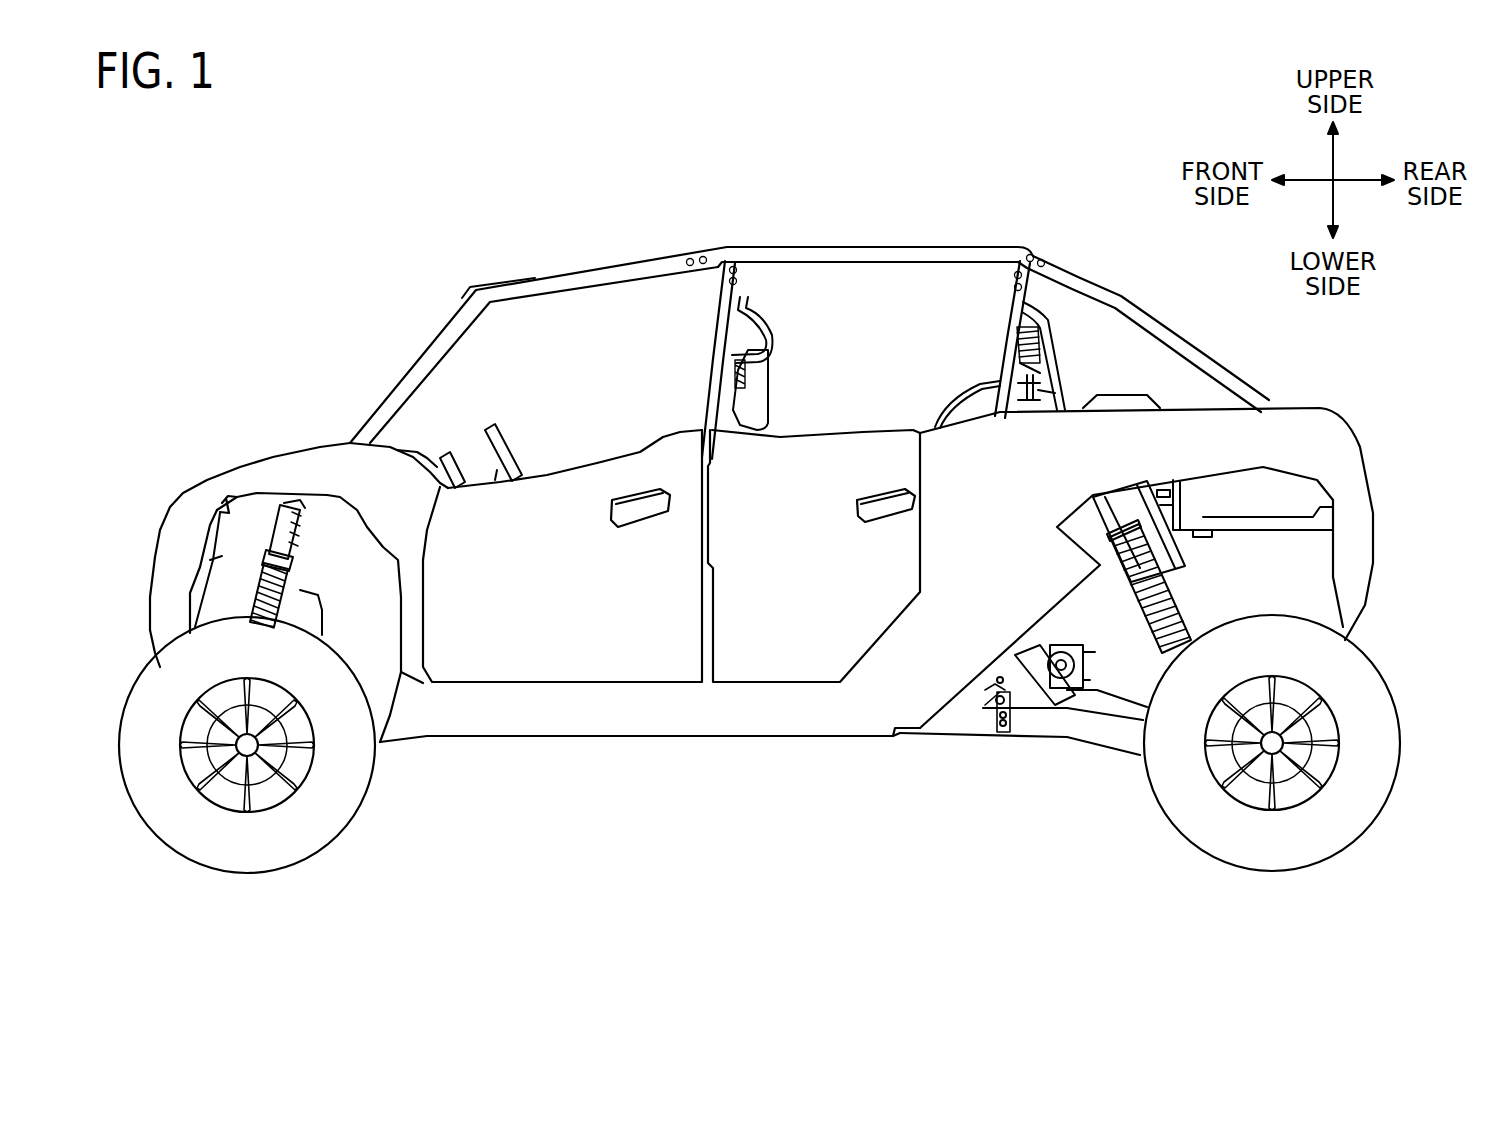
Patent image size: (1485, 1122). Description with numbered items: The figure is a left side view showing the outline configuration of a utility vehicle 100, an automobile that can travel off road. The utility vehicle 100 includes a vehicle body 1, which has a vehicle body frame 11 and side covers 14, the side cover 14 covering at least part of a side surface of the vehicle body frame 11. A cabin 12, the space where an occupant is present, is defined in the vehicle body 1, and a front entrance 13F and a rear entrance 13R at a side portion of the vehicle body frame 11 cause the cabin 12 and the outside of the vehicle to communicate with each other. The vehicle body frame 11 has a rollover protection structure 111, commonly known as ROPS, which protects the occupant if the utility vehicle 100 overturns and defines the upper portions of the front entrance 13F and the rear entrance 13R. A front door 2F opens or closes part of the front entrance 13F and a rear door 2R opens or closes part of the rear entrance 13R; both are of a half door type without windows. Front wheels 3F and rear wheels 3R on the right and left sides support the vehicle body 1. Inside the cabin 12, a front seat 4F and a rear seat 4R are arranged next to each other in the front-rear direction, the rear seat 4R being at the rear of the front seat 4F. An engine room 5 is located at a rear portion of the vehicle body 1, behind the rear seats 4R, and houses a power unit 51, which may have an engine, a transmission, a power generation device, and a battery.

The utility vehicle 100 is at (438, 172).
The vehicle body 1 is at (636, 228).
The vehicle body frame 11 is at (989, 236).
The rollover protection structure 111 is at (910, 243).
The cabin 12 is at (575, 357).
The front entrance 13F is at (432, 360).
The rear entrance 13R is at (762, 258).
The side cover 14 is at (1335, 441).
The front door 2F is at (572, 632).
The rear door 2R is at (787, 642).
The front wheel 3F is at (340, 837).
The rear wheel 3R is at (1175, 833).
The front seat 4F is at (770, 380).
The rear seat 4R is at (1065, 353).
The engine room 5 is at (1200, 563).
The power unit 51 is at (1073, 683).